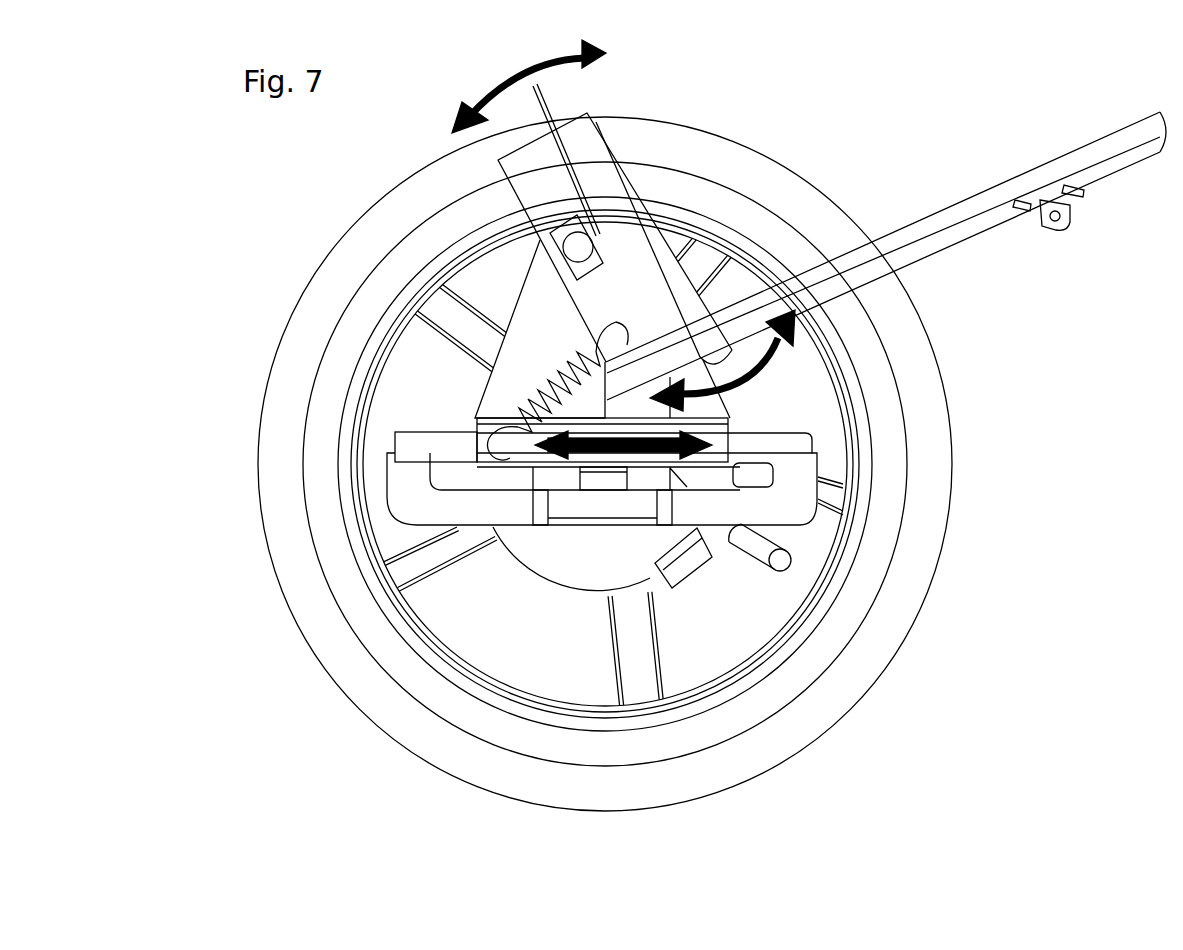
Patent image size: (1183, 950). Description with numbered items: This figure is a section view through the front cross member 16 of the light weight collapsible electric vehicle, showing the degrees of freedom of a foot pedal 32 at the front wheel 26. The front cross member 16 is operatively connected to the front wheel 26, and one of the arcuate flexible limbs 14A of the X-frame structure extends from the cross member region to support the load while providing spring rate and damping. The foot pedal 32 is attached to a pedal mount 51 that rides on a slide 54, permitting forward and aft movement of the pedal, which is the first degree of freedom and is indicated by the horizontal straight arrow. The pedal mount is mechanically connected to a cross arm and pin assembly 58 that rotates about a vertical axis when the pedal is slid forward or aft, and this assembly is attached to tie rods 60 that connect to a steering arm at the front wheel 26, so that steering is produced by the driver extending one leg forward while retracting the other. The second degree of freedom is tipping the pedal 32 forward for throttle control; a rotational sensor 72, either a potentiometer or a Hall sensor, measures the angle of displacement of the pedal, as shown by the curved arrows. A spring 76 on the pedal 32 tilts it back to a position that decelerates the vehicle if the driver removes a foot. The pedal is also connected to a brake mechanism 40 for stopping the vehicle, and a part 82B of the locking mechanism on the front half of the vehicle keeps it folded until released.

The arcuate flexible limb 14A is at (945, 180).
The front cross member 16 is at (418, 523).
The front wheel 26 is at (935, 566).
The foot pedal 32 is at (630, 165).
The brake mechanism 40 is at (648, 598).
The pedal mount 51 is at (508, 325).
The slide 54 is at (812, 433).
The cross arm and pin assembly 58 is at (590, 490).
The tie rod 60 is at (788, 573).
The rotational sensor 72 is at (540, 238).
The spring 76 is at (540, 387).
The locking mechanism part 82B is at (1071, 228).